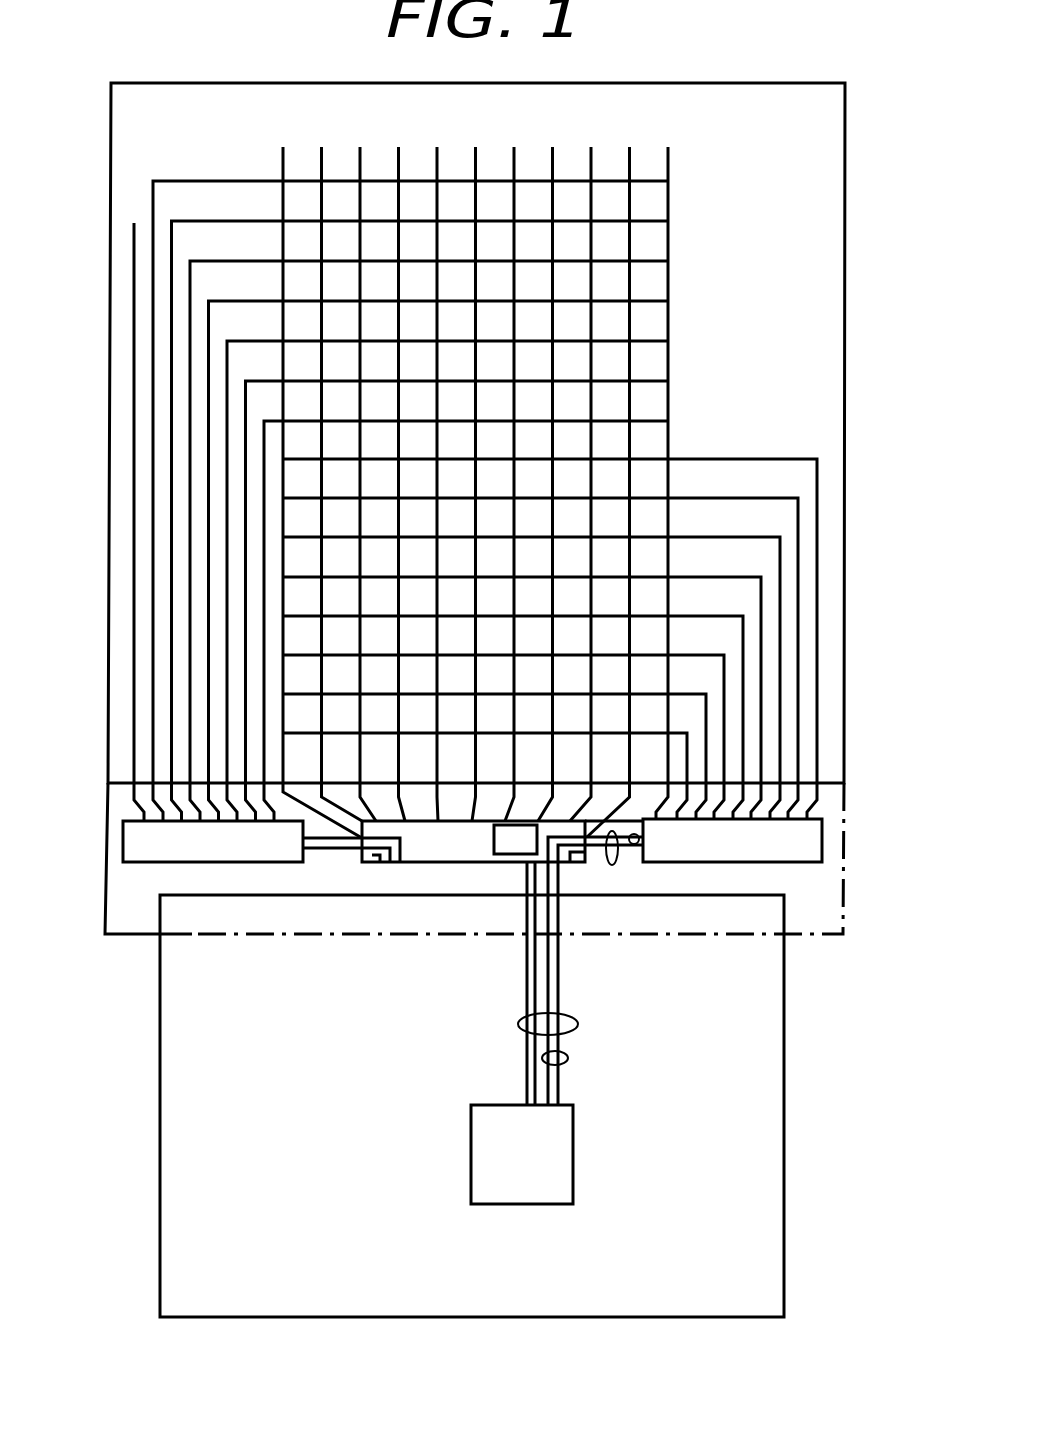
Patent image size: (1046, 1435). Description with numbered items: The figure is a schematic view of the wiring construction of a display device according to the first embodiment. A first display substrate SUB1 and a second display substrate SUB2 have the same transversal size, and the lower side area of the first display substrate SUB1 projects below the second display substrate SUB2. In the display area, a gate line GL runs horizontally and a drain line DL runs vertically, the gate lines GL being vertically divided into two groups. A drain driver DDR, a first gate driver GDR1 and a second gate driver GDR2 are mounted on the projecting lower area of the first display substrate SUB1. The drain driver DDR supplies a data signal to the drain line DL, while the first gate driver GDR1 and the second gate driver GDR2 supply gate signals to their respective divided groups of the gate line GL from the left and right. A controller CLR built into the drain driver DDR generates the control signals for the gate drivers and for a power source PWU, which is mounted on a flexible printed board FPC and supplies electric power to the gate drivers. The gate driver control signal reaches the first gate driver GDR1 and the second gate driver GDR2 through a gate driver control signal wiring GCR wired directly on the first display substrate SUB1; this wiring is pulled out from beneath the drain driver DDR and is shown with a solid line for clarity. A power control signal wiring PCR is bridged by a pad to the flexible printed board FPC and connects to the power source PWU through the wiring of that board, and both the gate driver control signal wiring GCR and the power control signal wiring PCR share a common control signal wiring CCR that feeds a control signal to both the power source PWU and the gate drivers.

The first display substrate SUB1 is at (126, 937).
The second display substrate SUB2 is at (836, 148).
The gate line GL is at (212, 179).
The drain line DL is at (663, 160).
The first gate driver GDR1 is at (261, 841).
The second gate driver GDR2 is at (685, 962).
The drain driver DDR is at (473, 963).
The controller CLR is at (513, 856).
The gate driver control signal wiring GCR is at (612, 863).
The common control signal wiring CCR is at (633, 845).
The power control signal wiring PCR is at (519, 1024).
The power source PWU is at (522, 1154).
The flexible printed board FPC is at (314, 1266).